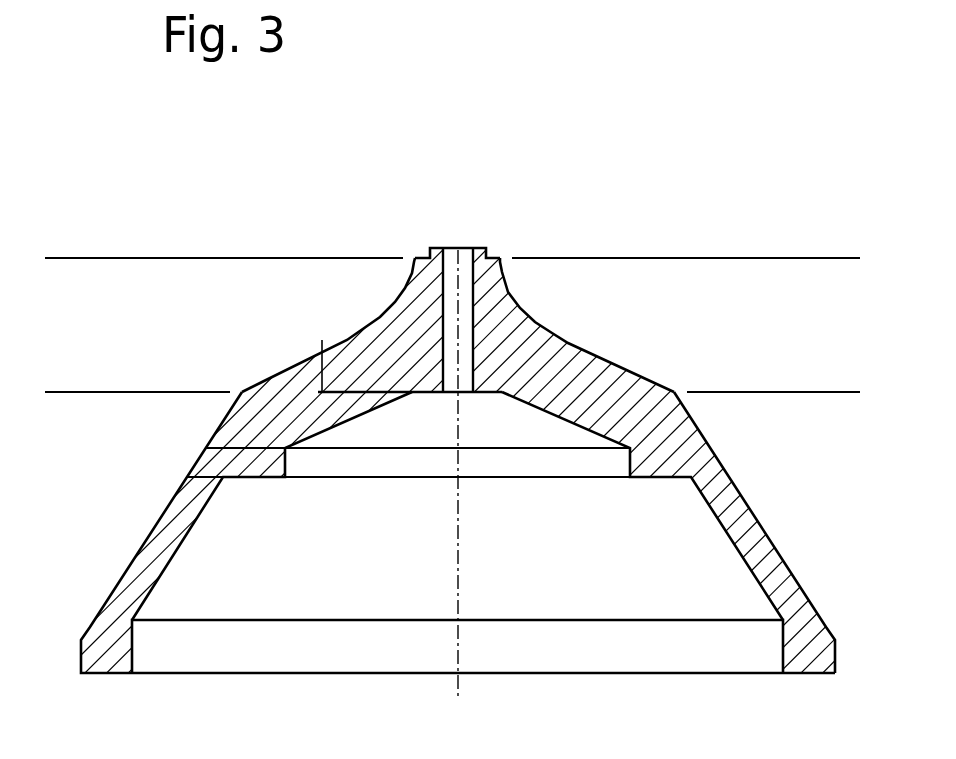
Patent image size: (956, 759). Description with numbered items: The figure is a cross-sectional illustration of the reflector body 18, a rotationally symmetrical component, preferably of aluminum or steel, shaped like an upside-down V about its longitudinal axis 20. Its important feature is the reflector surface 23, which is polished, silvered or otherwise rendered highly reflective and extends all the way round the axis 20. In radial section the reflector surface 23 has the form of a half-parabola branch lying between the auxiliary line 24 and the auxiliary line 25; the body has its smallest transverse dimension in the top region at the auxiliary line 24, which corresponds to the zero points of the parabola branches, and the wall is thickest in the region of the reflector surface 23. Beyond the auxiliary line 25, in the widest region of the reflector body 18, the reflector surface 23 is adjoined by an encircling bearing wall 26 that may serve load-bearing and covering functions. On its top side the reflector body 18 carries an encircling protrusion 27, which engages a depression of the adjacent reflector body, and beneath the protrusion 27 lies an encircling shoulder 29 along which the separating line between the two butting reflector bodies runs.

The reflector body 18 is at (561, 189).
The longitudinal axis 20 is at (460, 685).
The reflector surface 23 is at (347, 338).
The auxiliary line 24 is at (147, 258).
The auxiliary line 25 is at (100, 393).
The bearing wall 26 is at (730, 520).
The protrusion 27 is at (428, 248).
The shoulder 29 is at (493, 255).